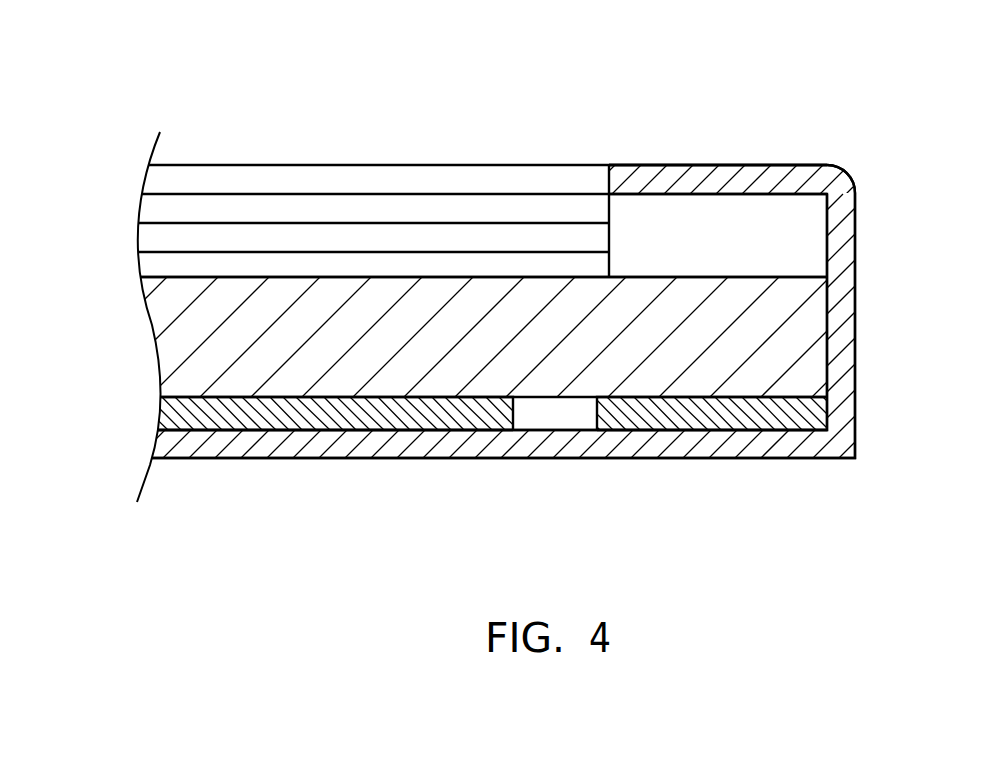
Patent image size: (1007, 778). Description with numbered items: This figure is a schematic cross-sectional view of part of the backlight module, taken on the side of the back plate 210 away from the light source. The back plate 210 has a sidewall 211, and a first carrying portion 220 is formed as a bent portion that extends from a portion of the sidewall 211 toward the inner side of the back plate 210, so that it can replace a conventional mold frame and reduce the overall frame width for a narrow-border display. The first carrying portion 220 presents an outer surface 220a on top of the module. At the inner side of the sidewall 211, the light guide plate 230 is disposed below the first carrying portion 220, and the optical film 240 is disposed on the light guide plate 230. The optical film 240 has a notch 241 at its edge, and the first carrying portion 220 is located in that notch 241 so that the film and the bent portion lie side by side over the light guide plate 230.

The back plate 210 is at (551, 261).
The sidewall 211 is at (855, 328).
The first carrying portion 220 is at (790, 173).
The outer surface of cover plate 220a is at (722, 165).
The light guide plate 230 is at (353, 365).
The optical film 240 is at (327, 177).
The notch 241 is at (624, 172).